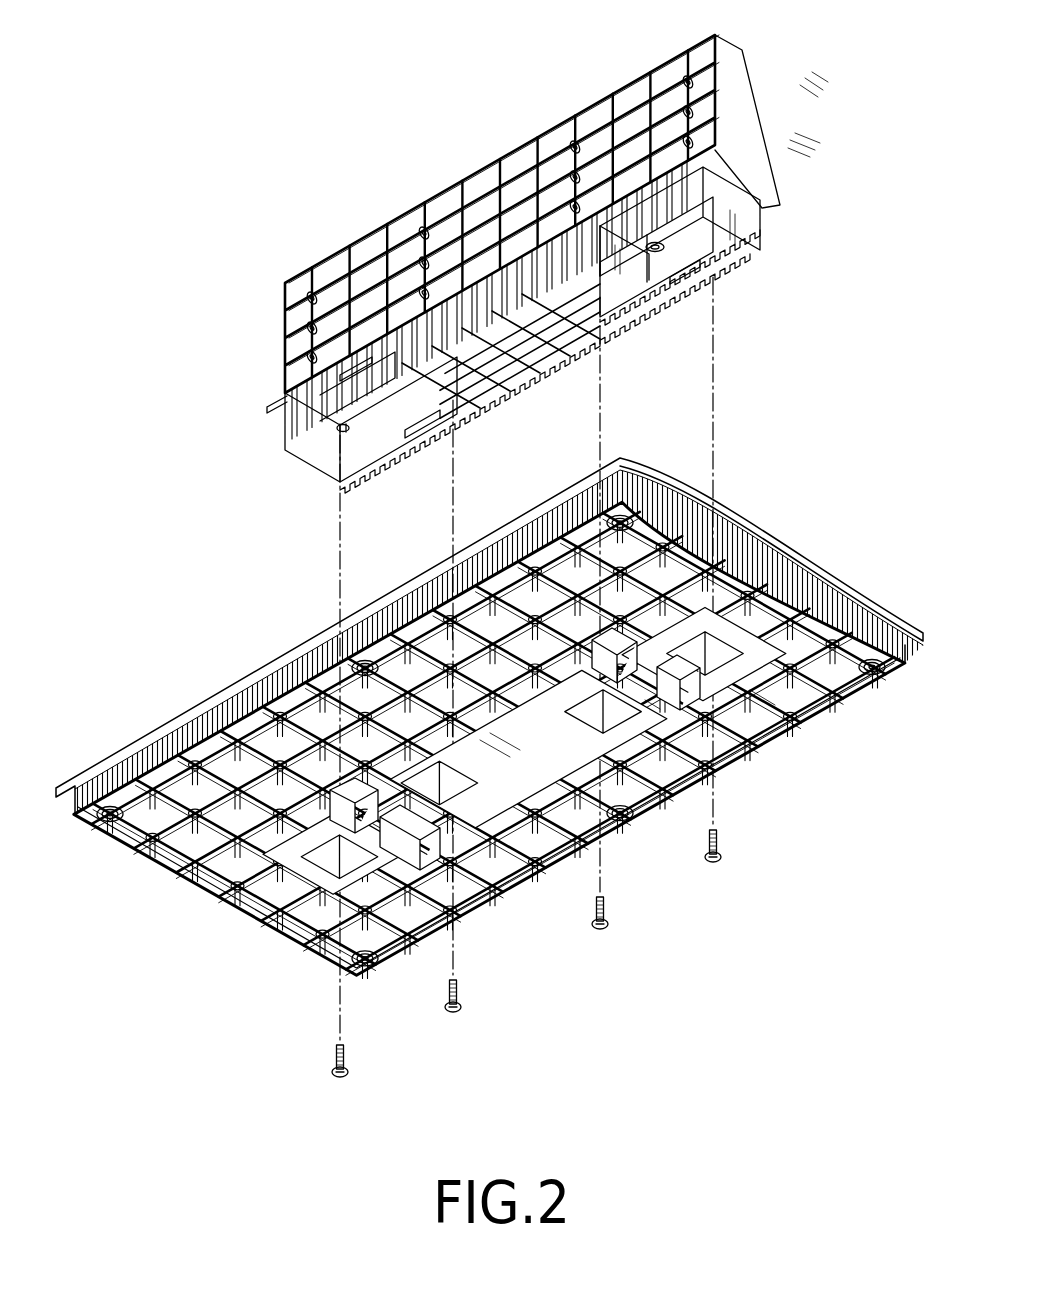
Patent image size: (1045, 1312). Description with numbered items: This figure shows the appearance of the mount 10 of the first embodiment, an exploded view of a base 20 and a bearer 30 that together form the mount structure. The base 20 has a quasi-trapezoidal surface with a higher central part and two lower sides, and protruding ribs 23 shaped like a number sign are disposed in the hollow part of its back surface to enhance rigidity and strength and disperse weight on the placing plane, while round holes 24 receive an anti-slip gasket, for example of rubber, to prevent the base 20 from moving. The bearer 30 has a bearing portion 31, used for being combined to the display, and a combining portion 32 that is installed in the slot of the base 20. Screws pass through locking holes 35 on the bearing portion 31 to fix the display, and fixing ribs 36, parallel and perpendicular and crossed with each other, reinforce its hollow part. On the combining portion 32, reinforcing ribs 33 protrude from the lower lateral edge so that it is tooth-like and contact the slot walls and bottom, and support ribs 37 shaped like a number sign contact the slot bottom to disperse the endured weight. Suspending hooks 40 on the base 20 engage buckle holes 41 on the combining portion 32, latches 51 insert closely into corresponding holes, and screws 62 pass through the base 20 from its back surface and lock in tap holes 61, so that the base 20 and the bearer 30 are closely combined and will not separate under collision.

The mount 10 is at (172, 422).
The base 20 is at (815, 716).
The protruding ribs 23 is at (178, 871).
The round holes 24 is at (113, 825).
The bearer 30 is at (860, 108).
The bearing portion 31 is at (750, 157).
The combining portion 32 is at (752, 231).
The reinforcing ribs 33 is at (283, 424).
The locking holes 35 is at (684, 80).
The fixing ribs 36 is at (600, 103).
The support ribs 37 is at (505, 397).
The suspending hooks 40 is at (300, 800).
The buckle holes 41 is at (304, 440).
The latches 51 is at (643, 254).
The tap holes 61 is at (346, 433).
The screws 62 is at (337, 1066).